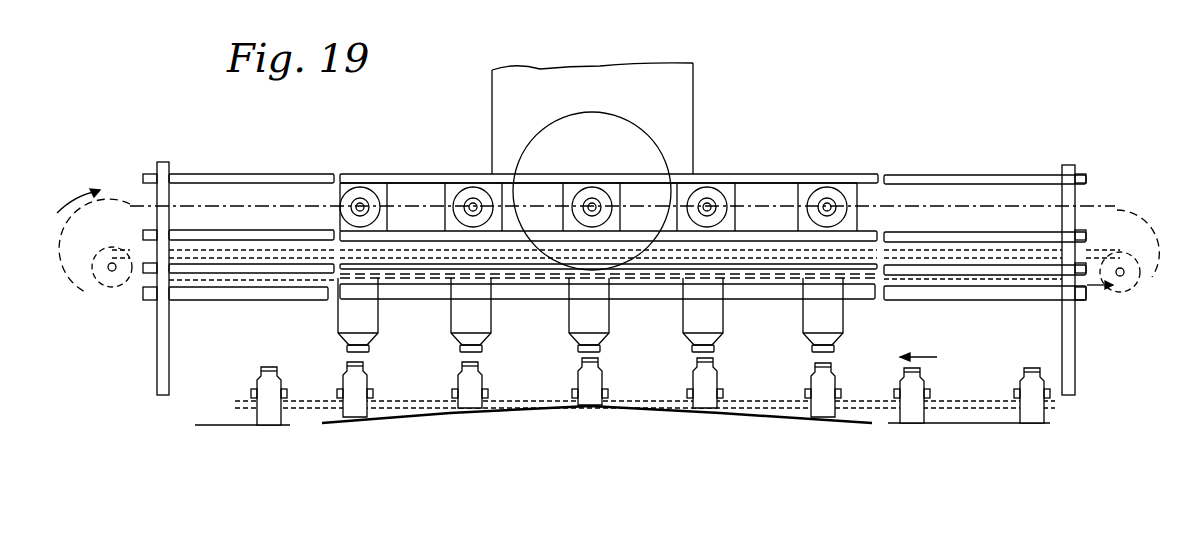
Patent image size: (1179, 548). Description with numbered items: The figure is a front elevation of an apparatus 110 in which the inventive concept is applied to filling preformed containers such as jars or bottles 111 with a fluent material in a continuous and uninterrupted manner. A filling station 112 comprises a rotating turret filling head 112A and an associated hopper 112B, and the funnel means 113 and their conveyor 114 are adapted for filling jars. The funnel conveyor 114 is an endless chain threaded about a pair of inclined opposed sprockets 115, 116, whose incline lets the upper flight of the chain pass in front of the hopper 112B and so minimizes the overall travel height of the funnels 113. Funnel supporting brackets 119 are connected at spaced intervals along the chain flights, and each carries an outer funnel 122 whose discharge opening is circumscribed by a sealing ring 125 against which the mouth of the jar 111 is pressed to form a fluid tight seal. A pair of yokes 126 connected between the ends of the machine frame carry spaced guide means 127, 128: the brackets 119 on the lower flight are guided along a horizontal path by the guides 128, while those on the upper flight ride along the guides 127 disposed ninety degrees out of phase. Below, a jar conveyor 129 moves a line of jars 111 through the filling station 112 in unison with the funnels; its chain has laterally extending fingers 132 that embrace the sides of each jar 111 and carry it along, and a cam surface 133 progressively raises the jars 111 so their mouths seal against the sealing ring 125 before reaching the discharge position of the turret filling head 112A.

The apparatus 110 is at (777, 155).
The bottles 111 is at (580, 372).
The filling station 112 is at (705, 122).
The rotating turret filling head 112A is at (638, 140).
The hopper 112B is at (613, 73).
The funnel means 113 is at (848, 182).
The funnel conveyor 114 is at (1130, 212).
The sprocket 115 is at (1127, 282).
The sprocket 116 is at (100, 273).
The funnel supporting brackets 119 is at (805, 188).
The outer funnel 122 is at (353, 318).
The sealing ring 125 is at (460, 350).
The yokes 126 is at (163, 170).
The guide means 127 is at (957, 235).
The guide means 128 is at (983, 295).
The jar conveyor 129 is at (978, 425).
The fingers 132 is at (688, 390).
The cam surface 133 is at (737, 415).